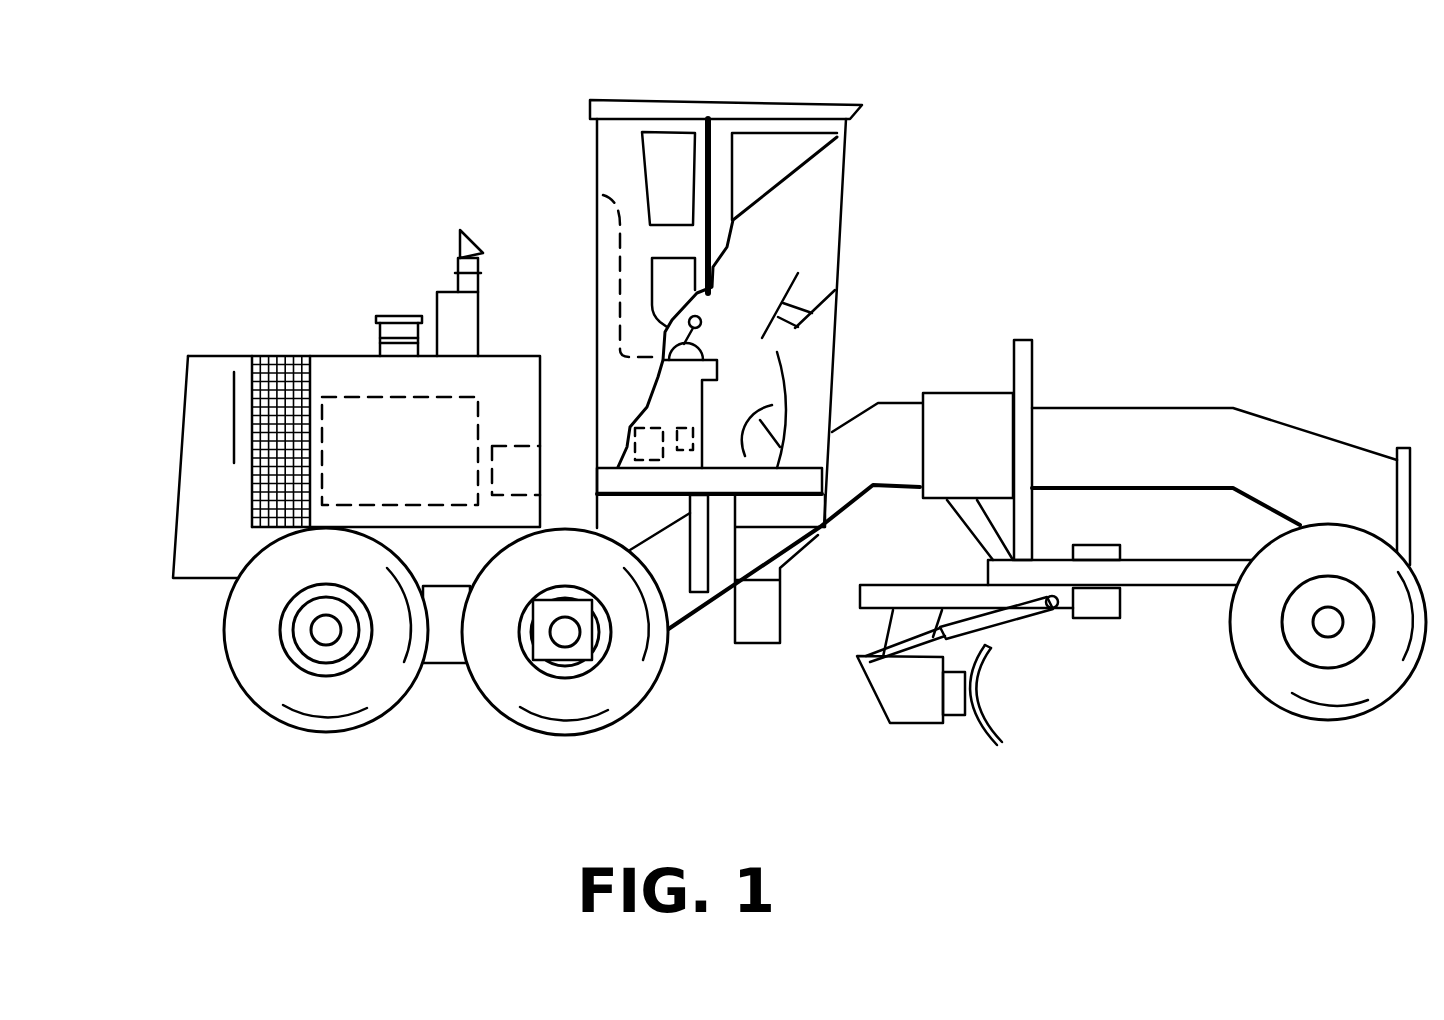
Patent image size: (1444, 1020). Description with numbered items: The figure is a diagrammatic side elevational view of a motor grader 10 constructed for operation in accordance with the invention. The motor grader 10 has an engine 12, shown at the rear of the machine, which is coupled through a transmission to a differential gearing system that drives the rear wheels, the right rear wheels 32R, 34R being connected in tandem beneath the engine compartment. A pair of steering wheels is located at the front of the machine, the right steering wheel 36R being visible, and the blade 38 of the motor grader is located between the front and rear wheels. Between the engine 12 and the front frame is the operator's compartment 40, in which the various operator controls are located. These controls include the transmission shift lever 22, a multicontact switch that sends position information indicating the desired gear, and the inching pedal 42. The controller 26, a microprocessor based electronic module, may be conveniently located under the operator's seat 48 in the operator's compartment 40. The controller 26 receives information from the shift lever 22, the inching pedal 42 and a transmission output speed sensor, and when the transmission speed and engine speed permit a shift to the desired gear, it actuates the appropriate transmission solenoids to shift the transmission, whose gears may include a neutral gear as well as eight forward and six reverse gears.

The motor grader 10 is at (1228, 179).
The engine 12 is at (388, 420).
The shift lever 22 is at (690, 337).
The controller 26 is at (643, 428).
The rear wheel 32R is at (613, 727).
The rear wheel 34R is at (352, 733).
The steering wheel 36R is at (1330, 720).
The blade 38 is at (977, 697).
The operator's compartment 40 is at (722, 99).
The inching pedal 42 is at (743, 423).
The operator's seat 48 is at (607, 245).